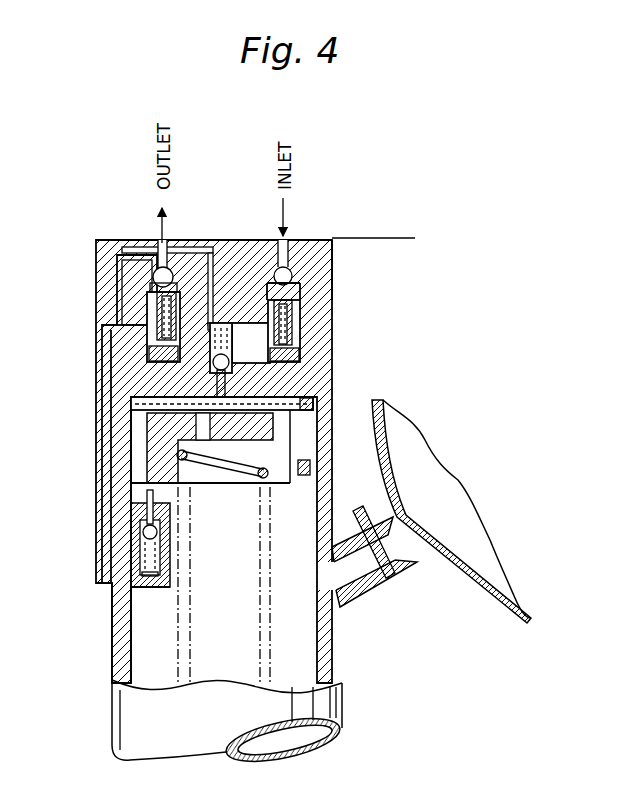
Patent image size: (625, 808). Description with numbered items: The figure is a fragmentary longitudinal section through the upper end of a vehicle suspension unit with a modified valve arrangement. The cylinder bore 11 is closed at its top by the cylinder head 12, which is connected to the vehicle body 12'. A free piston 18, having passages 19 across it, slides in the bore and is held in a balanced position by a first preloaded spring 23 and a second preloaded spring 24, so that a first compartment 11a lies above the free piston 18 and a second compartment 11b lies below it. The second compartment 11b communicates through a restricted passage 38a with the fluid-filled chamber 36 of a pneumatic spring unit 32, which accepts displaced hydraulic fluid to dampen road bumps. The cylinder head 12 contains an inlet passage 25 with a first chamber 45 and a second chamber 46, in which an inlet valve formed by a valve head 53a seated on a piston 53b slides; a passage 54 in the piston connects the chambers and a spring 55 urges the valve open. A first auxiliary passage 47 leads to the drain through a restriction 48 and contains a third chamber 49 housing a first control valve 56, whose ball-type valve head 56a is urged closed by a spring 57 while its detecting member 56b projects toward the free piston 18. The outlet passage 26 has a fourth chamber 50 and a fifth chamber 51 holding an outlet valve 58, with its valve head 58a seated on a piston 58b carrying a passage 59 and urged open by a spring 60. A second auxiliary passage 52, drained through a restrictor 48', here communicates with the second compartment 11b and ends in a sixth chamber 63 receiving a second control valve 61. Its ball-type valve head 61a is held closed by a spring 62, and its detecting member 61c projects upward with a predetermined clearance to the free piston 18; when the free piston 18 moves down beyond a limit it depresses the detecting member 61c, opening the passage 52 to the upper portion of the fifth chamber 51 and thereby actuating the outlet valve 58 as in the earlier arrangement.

The cylinder bore 11 is at (235, 612).
The first compartment 11a is at (110, 440).
The second compartment 11b is at (120, 642).
The cylinder head 12 is at (241, 461).
The vehicle body 12' is at (394, 250).
The free piston 18 is at (170, 482).
The passages 19 is at (153, 470).
The first preloaded spring 23 is at (130, 400).
The second preloaded spring 24 is at (130, 681).
The inlet passage 25 is at (287, 262).
The outlet passage 26 is at (172, 238).
The pneumatic spring unit 32 is at (488, 634).
The chamber 36 is at (450, 508).
The restricted passage 38a is at (356, 562).
The first chamber 45 is at (327, 256).
The second chamber 46 is at (297, 343).
The first auxiliary passage 47 is at (212, 322).
The restriction 48 is at (193, 229).
The restrictor 48' is at (131, 225).
The third chamber 49 is at (221, 352).
The fourth chamber 50 is at (152, 278).
The fifth chamber 51 is at (146, 340).
The second auxiliary passage 52 is at (120, 410).
The valve head 53a is at (288, 268).
The piston 53b is at (297, 289).
The passage 54 is at (293, 318).
The spring 55 is at (300, 360).
The first control valve 56 is at (305, 460).
The valve head 56a is at (300, 440).
The detecting member 56b is at (223, 410).
The spring 57 is at (307, 403).
The outlet valve 58 is at (105, 315).
The valve head 58a is at (130, 256).
The piston 58b is at (110, 330).
The passage 59 is at (145, 303).
The spring 60 is at (147, 357).
The second control valve 61 is at (143, 532).
The valve head 61a is at (141, 545).
The detecting member 61c is at (147, 497).
The spring 62 is at (149, 590).
The sixth chamber 63 is at (130, 563).